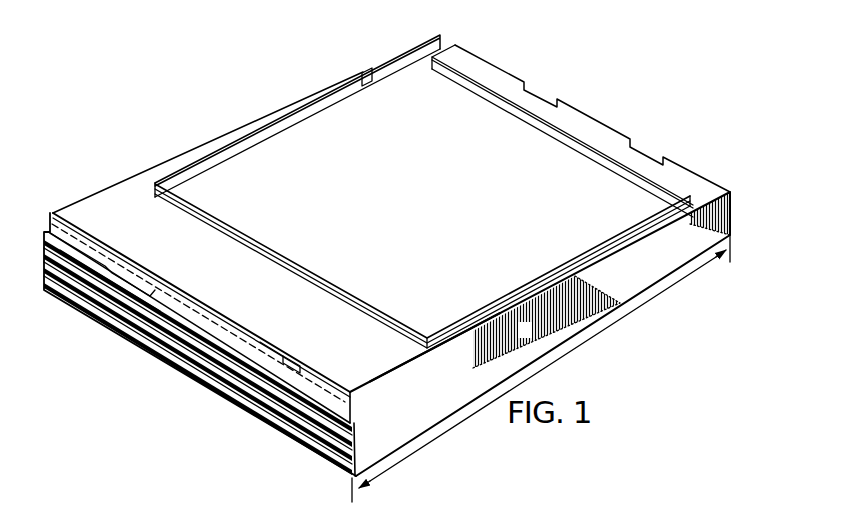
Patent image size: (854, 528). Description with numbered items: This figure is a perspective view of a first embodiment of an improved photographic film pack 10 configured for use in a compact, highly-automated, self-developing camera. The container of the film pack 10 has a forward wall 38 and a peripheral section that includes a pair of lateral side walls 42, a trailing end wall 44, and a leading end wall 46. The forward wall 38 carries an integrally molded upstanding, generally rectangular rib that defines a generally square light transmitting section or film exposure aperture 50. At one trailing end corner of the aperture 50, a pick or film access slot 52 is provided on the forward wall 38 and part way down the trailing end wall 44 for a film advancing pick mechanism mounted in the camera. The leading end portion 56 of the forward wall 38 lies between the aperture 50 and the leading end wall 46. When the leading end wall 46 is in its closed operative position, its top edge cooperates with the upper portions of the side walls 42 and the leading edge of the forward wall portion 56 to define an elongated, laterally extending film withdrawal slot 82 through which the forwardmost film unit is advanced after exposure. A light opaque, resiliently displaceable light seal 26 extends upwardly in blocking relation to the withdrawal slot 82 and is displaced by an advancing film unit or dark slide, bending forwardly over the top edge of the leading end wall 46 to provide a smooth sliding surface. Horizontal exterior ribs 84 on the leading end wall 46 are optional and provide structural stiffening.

The photographic film pack 10 is at (634, 316).
The light seal 26 is at (52, 212).
The forward wall 38 is at (243, 133).
The lateral side walls 42 is at (410, 400).
The trailing end wall 44 is at (600, 124).
The leading end wall 46 is at (238, 415).
The film exposure aperture 50 is at (342, 143).
The film access slot 52 is at (389, 72).
The leading end portion of forward wall 56 is at (232, 273).
The film withdrawal slot 82 is at (316, 393).
The horizontal exterior ribs 84 is at (116, 304).